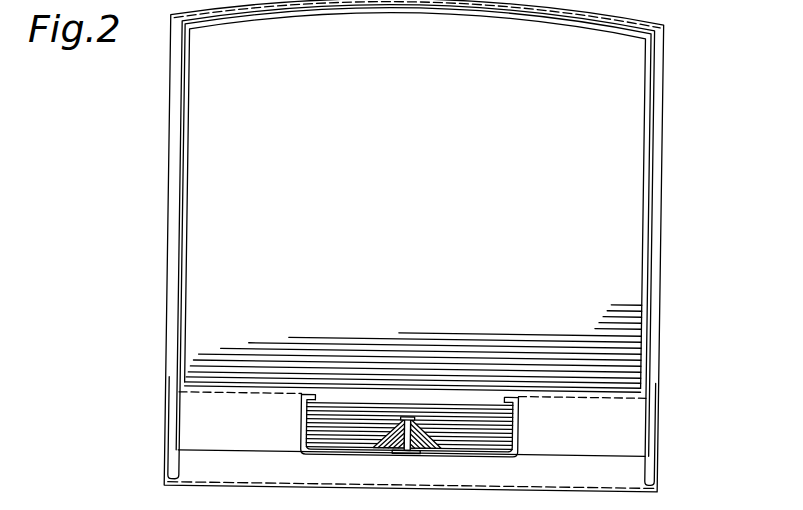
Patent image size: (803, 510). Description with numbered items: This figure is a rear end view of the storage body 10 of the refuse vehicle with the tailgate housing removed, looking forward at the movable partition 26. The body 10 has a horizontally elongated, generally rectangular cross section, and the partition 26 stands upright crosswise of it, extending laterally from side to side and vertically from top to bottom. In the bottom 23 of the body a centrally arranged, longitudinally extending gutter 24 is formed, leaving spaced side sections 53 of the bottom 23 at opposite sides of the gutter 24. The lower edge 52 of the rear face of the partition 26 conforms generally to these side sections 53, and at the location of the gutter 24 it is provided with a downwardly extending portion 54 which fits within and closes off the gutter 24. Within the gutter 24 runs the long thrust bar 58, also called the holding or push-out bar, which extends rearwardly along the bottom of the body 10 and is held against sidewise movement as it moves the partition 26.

The storage body 10 is at (665, 183).
The movable partition 26 is at (427, 146).
The lower edge 52 is at (260, 381).
The bottom 23 is at (531, 394).
The side sections 53 is at (215, 400).
The gutter 24 is at (360, 435).
The downwardly extending portion 54 is at (475, 435).
The thrust bar 58 is at (405, 418).